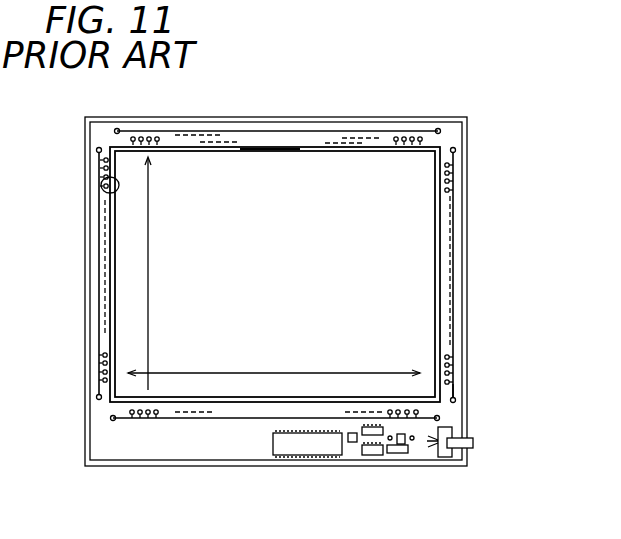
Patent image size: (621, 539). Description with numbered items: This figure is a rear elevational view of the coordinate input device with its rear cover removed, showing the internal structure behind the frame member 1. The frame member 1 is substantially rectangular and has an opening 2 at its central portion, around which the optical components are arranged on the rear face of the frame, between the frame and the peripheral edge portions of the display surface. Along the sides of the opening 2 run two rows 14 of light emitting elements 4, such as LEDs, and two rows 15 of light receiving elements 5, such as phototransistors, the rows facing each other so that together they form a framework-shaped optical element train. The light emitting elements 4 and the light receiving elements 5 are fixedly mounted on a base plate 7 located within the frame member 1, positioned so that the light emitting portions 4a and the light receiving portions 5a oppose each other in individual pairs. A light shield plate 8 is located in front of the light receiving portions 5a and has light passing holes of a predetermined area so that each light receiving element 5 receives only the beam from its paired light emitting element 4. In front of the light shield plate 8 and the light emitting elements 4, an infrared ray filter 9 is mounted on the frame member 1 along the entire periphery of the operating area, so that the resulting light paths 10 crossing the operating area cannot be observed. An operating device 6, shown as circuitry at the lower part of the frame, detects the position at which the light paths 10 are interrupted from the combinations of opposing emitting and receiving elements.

The frame member 1 is at (85, 441).
The opening 2 is at (432, 210).
The light emitting elements 4 is at (449, 357).
The light emitting portions 4a is at (453, 393).
The light receiving elements 5 is at (153, 137).
The light receiving portions 5a is at (104, 196).
The operating device 6 is at (418, 467).
The base plate 7 is at (200, 134).
The light shield plate 8 is at (101, 148).
The infrared ray filter 9 is at (272, 150).
The light paths 10 is at (148, 257).
The rows of the light emitting elements 14 is at (502, 162).
The rows of the light receiving elements 15 is at (128, 87).